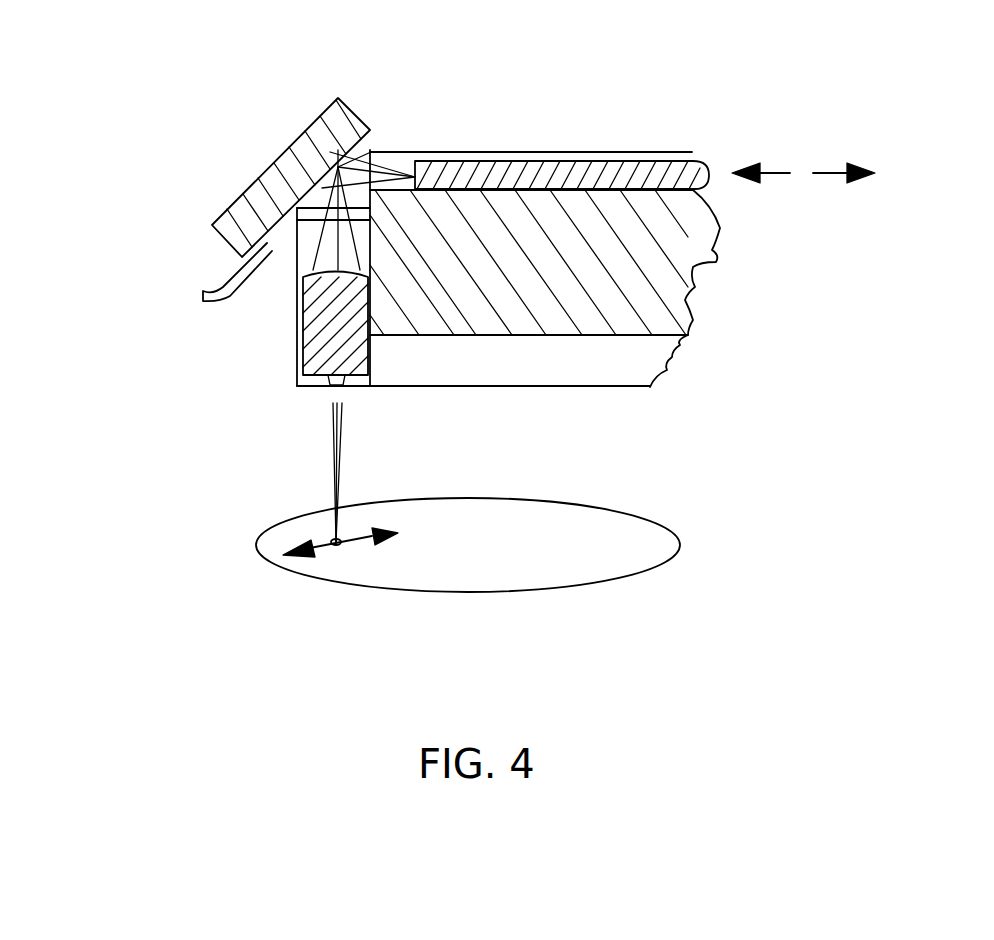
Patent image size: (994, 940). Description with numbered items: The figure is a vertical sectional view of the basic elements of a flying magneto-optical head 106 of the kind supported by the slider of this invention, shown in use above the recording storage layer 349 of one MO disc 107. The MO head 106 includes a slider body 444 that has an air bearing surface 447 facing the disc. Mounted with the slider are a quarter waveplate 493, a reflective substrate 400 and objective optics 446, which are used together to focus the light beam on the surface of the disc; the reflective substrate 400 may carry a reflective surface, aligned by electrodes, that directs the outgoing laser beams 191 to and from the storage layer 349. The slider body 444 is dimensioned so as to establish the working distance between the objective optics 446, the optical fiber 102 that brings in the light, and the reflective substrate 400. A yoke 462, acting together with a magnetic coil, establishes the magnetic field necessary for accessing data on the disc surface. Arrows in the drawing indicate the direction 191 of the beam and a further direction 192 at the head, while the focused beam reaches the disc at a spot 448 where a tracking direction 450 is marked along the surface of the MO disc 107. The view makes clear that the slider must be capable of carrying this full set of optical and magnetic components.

The flying head 106 is at (517, 36).
The quarter waveplate 493 is at (290, 152).
The reflective substrate 400 is at (224, 216).
The optical fiber 102 is at (567, 150).
The slider body 444 is at (687, 300).
The air bearing surface 447 is at (545, 390).
The objective optics 446 is at (318, 325).
The yoke 462 is at (300, 382).
The outgoing laser beams 191 is at (773, 174).
The direction of motion 192 is at (837, 174).
The MO disc 107 is at (256, 540).
The recording storage layer 349 is at (555, 572).
The focused spot 448 is at (340, 547).
The tracking direction 450 is at (325, 547).